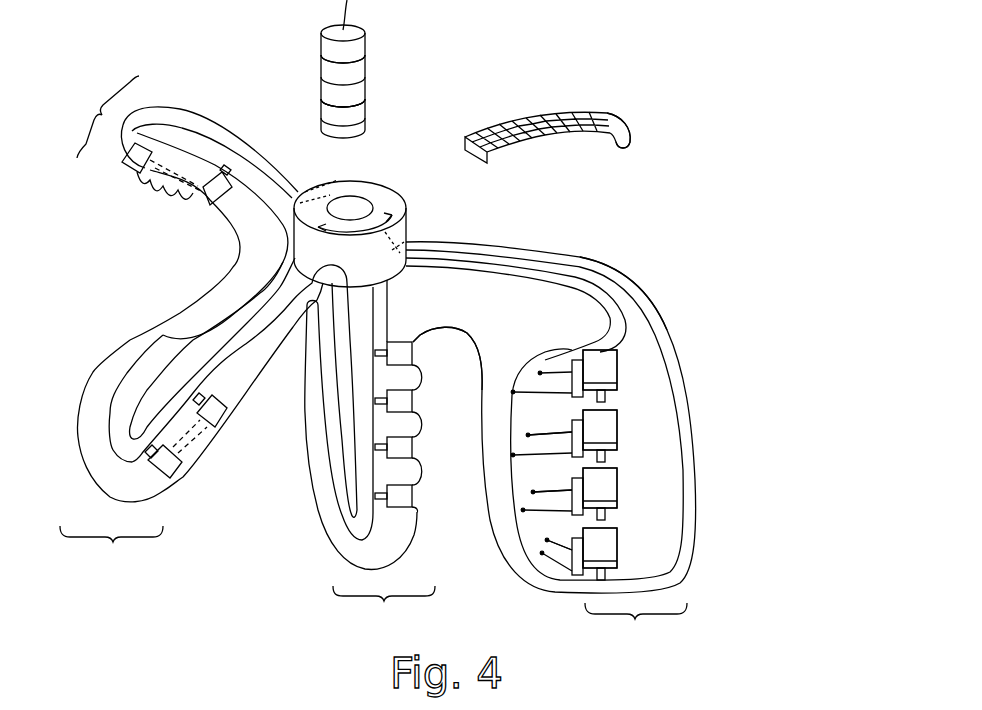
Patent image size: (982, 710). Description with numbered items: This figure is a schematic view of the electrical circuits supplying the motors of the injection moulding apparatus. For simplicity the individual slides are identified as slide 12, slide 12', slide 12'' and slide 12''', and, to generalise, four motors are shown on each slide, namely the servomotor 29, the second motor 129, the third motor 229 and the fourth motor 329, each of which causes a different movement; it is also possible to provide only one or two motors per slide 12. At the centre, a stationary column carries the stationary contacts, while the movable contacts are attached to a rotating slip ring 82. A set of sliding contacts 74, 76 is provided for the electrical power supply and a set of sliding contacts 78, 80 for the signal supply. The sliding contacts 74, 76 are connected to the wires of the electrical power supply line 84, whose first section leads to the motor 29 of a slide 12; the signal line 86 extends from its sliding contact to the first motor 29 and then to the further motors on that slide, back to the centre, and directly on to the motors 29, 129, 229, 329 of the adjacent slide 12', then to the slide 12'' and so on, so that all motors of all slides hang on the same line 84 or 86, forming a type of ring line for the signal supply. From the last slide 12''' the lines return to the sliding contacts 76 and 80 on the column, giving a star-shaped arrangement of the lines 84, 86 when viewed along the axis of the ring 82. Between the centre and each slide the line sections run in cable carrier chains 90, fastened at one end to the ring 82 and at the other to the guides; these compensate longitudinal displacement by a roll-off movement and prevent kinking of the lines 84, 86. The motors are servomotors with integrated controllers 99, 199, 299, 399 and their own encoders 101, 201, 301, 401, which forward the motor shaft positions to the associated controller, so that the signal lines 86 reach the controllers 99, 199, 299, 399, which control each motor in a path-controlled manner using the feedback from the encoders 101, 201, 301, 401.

The slide 12 is at (551, 443).
The second slide 12' is at (370, 454).
The third slide 12'' is at (203, 416).
The last slide 12''' is at (100, 117).
The servomotor 29 is at (203, 200).
The sliding contact 74 is at (362, 65).
The sliding contact 76 is at (322, 70).
The sliding contact 78 is at (362, 100).
The sliding contact 80 is at (322, 108).
The rotating slip ring 82 is at (373, 200).
The electrical power supply line 84 is at (590, 107).
The signal line 86 is at (597, 290).
The cable carrier chain 90 is at (497, 127).
The integrated controller 99 is at (575, 376).
The encoder 101 is at (607, 383).
The second motor 129 is at (400, 400).
The integrated controller 199 is at (575, 455).
The encoder 201 is at (600, 442).
The third motor 229 is at (400, 447).
The integrated controller 299 is at (572, 508).
The encoder 301 is at (600, 503).
The fourth motor 329 is at (130, 163).
The integrated controller 399 is at (578, 590).
The encoder 401 is at (600, 563).